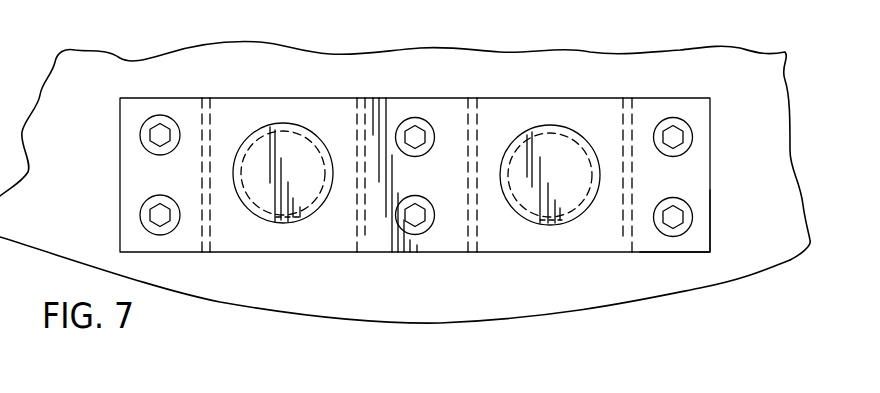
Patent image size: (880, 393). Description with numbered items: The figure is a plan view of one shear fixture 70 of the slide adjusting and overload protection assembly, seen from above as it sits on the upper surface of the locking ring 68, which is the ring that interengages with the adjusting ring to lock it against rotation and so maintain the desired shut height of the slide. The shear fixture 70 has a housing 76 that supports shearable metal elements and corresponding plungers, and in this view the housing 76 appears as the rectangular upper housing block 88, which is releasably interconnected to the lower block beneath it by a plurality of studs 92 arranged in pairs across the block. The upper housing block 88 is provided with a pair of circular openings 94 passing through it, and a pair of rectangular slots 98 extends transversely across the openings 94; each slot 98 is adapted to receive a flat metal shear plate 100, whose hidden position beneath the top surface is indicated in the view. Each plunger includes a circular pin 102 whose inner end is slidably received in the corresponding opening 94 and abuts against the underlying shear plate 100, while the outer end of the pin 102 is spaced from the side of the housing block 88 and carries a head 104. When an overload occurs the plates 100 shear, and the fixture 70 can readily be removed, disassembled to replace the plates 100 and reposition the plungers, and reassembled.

The locking ring 68 is at (508, 306).
The shear fixture 70 is at (684, 75).
The housing 76 is at (711, 193).
The upper housing block 88 is at (695, 246).
The studs 92 is at (162, 196).
The circular openings 94 is at (265, 208).
The rectangular slots 98 is at (365, 235).
The shear plate 100 is at (240, 110).
The circular pin 102 is at (313, 140).
The head 104 is at (308, 218).